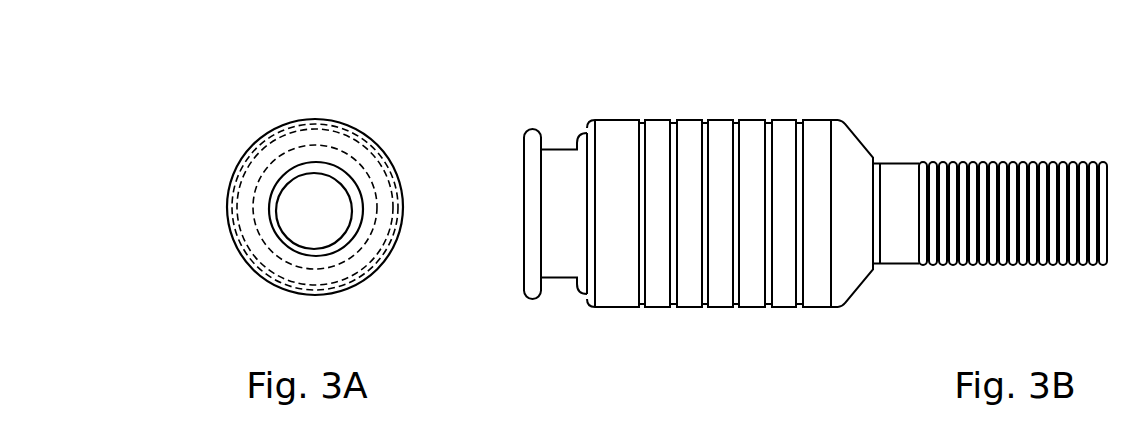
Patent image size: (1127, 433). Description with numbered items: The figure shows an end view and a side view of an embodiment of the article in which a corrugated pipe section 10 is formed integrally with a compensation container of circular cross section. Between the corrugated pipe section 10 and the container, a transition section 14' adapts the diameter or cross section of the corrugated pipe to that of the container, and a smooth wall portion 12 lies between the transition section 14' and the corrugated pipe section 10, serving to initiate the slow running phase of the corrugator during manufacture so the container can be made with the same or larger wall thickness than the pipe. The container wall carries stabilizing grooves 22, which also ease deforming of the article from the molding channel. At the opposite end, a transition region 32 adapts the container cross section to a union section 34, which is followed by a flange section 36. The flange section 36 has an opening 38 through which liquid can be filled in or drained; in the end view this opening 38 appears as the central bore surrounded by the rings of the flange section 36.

In FIG. 3B, the corrugated pipe section 10 is at (1058, 145).
In FIG. 3A, the smooth wall portion 12 is at (332, 222).
In FIG. 3B, the smooth wall portion 12 is at (900, 164).
In FIG. 3B, the transition section 14' is at (878, 189).
In FIG. 3B, the stabilizing grooves 22 is at (672, 122).
In FIG. 3B, the transition region 32 is at (585, 142).
In FIG. 3B, the union section 34 is at (567, 148).
In FIG. 3A, the flange section 36 is at (268, 178).
In FIG. 3B, the flange section 36 is at (523, 145).
In FIG. 3B, the opening 38 is at (523, 185).